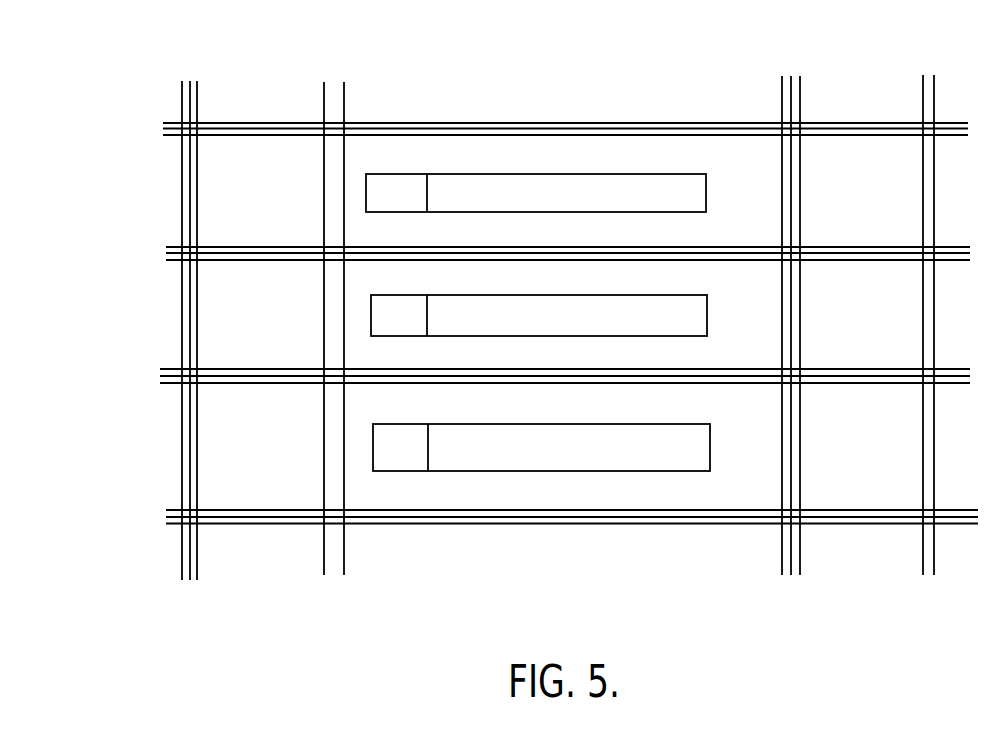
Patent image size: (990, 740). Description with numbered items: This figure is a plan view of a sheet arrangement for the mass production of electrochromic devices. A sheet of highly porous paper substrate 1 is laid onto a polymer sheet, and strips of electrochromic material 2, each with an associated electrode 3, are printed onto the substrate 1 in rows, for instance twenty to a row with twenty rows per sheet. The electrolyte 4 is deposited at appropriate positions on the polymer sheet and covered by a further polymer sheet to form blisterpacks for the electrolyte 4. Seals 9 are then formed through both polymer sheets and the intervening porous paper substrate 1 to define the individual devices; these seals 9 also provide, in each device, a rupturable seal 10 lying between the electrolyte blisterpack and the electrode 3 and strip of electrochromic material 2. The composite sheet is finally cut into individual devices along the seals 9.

The porous paper substrate 1 is at (460, 152).
The strip of electrochromic material 2 is at (613, 190).
The electrode 3 is at (395, 190).
The electrolyte 4 is at (265, 173).
The seal 9 is at (187, 81).
The rupturable seal 10 is at (323, 82).